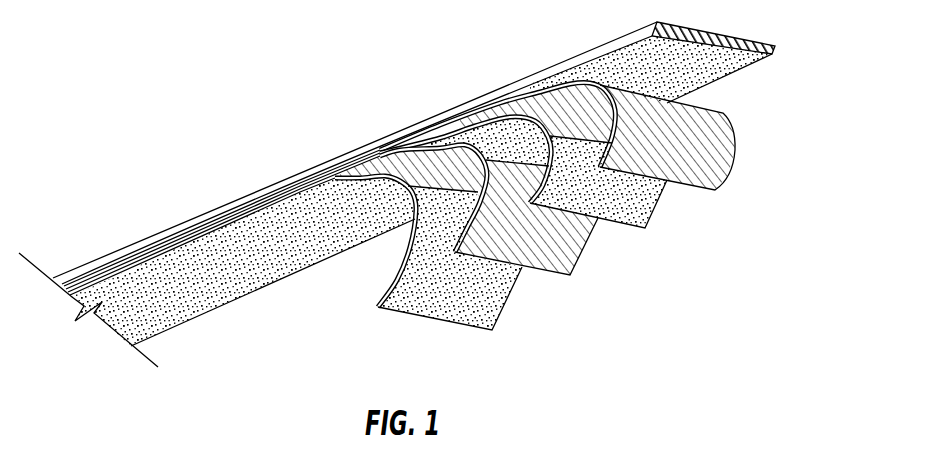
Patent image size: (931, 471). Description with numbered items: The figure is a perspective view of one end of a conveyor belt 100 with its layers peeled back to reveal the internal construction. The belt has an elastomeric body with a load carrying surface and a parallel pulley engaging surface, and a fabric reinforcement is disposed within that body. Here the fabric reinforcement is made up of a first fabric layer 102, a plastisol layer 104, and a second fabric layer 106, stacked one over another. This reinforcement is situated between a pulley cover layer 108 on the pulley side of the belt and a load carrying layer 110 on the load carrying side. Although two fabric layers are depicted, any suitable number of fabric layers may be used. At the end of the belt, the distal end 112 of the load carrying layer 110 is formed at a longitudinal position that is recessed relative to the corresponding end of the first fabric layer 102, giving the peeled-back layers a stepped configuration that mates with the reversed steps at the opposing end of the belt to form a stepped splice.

The conveyor belt 100 is at (210, 82).
The first fabric layer 102 is at (718, 160).
The plastisol layer 104 is at (643, 200).
The second fabric layer 106 is at (573, 247).
The pulley cover layer 108 is at (497, 302).
The load carrying layer 110 is at (693, 80).
The distal end of load carrying layer 112 is at (775, 47).